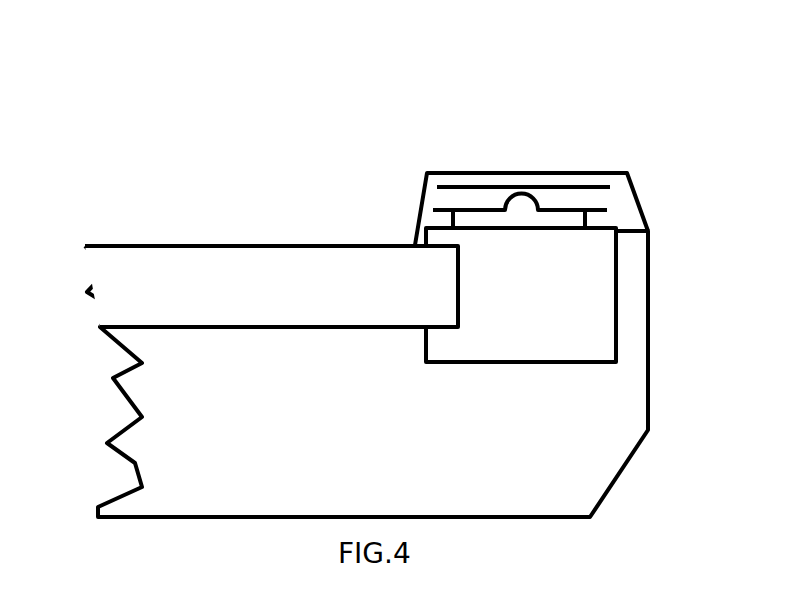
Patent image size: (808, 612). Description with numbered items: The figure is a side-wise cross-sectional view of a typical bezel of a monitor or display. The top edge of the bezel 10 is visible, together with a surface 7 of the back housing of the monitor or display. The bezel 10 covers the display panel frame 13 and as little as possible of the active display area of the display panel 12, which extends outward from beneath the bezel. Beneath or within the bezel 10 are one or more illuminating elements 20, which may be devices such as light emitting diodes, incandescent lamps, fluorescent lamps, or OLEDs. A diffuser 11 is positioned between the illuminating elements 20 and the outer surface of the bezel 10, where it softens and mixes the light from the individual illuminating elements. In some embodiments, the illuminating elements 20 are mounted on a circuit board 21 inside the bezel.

The surface of the back housing 7 is at (650, 420).
The bezel 10 is at (590, 172).
The diffuser 11 is at (440, 187).
The display panel 12 is at (195, 245).
The display panel frame 13 is at (578, 312).
The illuminating elements 20 is at (507, 210).
The circuit board 21 is at (607, 209).